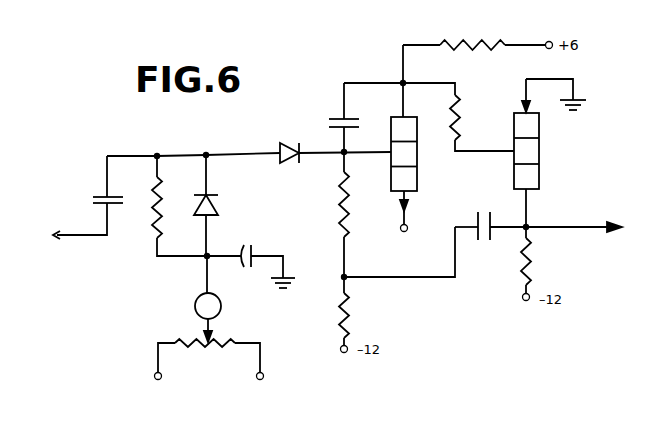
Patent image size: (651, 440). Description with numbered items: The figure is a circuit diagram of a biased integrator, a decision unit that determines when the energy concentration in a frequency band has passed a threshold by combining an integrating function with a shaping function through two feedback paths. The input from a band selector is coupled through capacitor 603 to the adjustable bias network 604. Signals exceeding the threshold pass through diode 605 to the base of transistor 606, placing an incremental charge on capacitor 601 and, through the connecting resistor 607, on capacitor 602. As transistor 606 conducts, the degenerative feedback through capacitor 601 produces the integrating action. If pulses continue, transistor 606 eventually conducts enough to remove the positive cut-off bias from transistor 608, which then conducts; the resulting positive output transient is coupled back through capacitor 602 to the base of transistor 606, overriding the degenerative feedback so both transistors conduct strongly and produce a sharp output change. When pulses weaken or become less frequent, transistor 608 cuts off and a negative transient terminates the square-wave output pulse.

The capacitor 601 is at (329, 123).
The capacitor 602 is at (483, 241).
The capacitor 603 is at (93, 202).
The adjustable bias network 604 is at (218, 334).
The diode 605 is at (290, 142).
The transistor 606 is at (418, 190).
The connecting resistor 607 is at (338, 208).
The transistor 608 is at (539, 171).